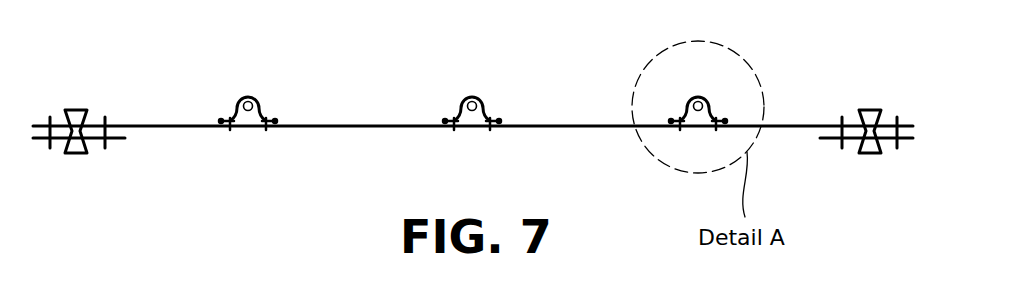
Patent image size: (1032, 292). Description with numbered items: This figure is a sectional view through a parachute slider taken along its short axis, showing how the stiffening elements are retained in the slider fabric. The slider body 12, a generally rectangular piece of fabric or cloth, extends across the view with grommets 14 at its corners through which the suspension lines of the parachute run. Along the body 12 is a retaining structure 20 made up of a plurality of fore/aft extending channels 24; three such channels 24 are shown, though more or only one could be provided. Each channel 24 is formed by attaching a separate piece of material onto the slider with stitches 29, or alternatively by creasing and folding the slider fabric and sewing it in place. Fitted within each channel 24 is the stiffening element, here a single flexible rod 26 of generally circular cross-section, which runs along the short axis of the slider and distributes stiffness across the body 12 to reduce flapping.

The slider body 12 is at (157, 123).
The grommets 14 is at (78, 108).
The retaining structure 20 is at (509, 94).
The channels 24 is at (239, 98).
The flexible rod 26 is at (251, 95).
The stitches 29 is at (229, 128).